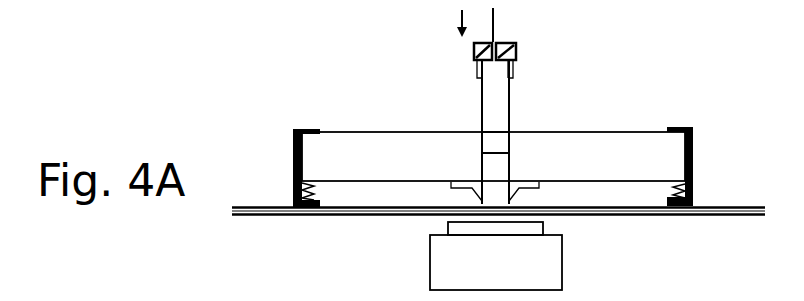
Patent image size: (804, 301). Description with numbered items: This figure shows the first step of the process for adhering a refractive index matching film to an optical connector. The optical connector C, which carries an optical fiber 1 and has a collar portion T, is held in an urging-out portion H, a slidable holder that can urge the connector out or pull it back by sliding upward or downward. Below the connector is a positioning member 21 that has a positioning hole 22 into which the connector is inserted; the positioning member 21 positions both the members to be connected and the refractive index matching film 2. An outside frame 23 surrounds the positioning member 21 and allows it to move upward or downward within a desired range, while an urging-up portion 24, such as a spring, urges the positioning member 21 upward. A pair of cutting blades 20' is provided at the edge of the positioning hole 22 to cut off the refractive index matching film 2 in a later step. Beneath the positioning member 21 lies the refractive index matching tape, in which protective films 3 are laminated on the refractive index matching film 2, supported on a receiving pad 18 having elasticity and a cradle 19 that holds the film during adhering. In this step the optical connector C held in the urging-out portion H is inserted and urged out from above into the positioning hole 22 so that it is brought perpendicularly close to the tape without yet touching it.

The optical fiber 1 is at (495, 20).
The urging-out portion H is at (518, 47).
The collar portion T is at (477, 69).
The optical connector C is at (509, 97).
The positioning hole 22 is at (480, 135).
The positioning member 21 is at (363, 132).
The outside frame 23 is at (305, 127).
The urging-up portion 24 is at (318, 190).
The cutting blades 20' is at (515, 153).
The refractive index matching film 2 is at (285, 206).
The protective film 3 is at (706, 216).
The receiving pad 18 is at (438, 228).
The cradle 19 is at (562, 265).